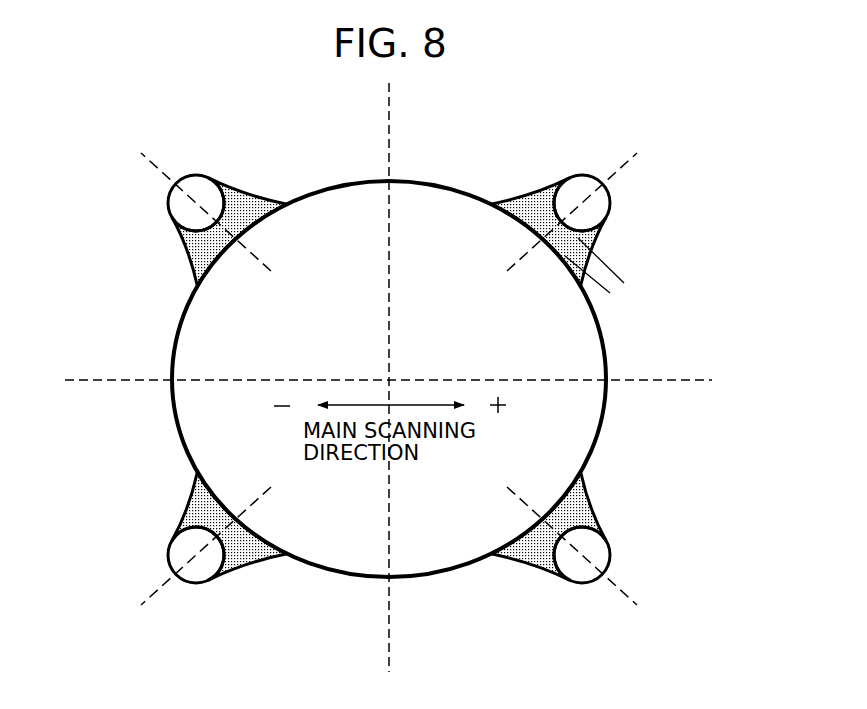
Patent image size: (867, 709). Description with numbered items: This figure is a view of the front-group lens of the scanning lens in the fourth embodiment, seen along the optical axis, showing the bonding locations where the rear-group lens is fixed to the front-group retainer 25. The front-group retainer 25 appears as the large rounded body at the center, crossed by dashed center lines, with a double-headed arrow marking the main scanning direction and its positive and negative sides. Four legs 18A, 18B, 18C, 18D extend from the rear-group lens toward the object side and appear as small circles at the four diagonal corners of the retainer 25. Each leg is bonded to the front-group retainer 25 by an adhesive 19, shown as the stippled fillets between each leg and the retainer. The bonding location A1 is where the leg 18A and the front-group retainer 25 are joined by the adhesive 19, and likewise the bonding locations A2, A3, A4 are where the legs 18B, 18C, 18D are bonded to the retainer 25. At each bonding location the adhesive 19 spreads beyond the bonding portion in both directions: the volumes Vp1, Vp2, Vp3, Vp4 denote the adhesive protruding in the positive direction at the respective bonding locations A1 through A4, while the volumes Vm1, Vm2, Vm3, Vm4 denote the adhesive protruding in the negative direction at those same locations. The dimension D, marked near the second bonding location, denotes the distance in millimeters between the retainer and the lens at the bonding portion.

The front-group retainer 25 is at (608, 372).
The adhesive 19 is at (233, 220).
The leg 18A is at (200, 185).
The leg 18B is at (578, 185).
The leg 18C is at (580, 575).
The leg 18D is at (202, 575).
The bonding location A1 is at (157, 201).
The bonding location A2 is at (621, 201).
The bonding location A3 is at (622, 557).
The bonding location A4 is at (159, 558).
The adhesive volume in negative direction Vm1 is at (192, 252).
The adhesive volume in negative direction Vm2 is at (518, 203).
The adhesive volume in negative direction Vm3 is at (520, 555).
The adhesive volume in negative direction Vm4 is at (191, 507).
The adhesive volume in positive direction Vp1 is at (260, 203).
The adhesive volume in positive direction Vp2 is at (594, 237).
The adhesive volume in positive direction Vp3 is at (590, 507).
The adhesive volume in positive direction Vp4 is at (263, 555).
The distance between retainer and lens at bonding portion D is at (619, 278).